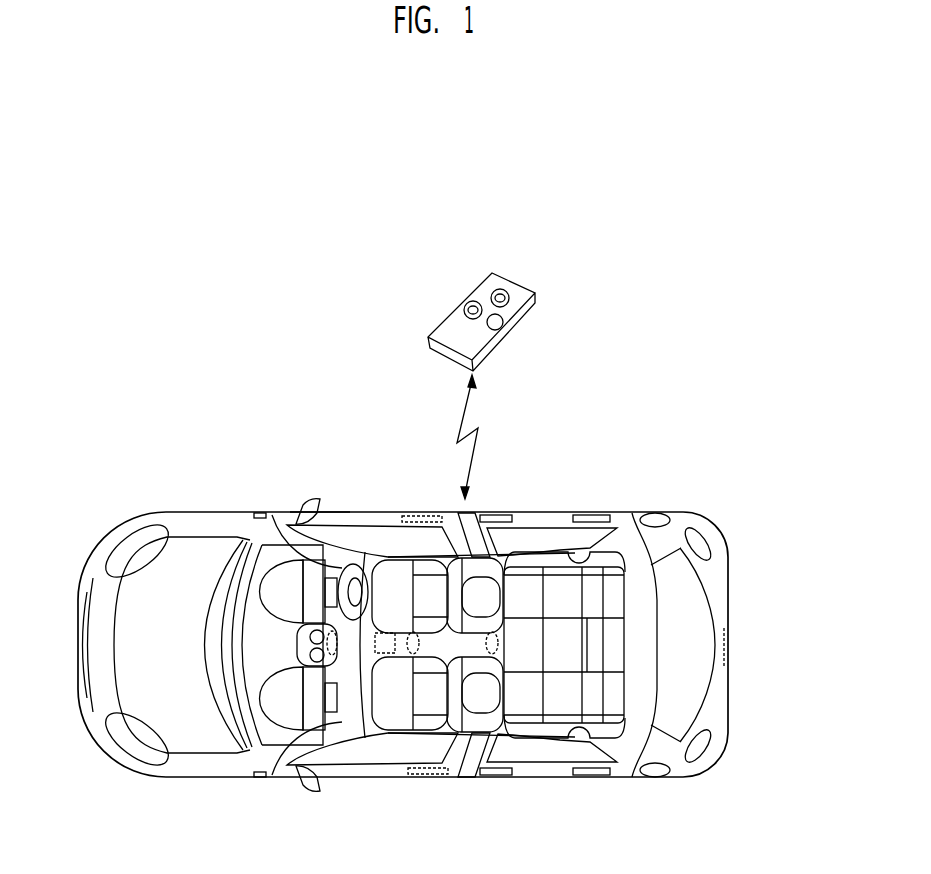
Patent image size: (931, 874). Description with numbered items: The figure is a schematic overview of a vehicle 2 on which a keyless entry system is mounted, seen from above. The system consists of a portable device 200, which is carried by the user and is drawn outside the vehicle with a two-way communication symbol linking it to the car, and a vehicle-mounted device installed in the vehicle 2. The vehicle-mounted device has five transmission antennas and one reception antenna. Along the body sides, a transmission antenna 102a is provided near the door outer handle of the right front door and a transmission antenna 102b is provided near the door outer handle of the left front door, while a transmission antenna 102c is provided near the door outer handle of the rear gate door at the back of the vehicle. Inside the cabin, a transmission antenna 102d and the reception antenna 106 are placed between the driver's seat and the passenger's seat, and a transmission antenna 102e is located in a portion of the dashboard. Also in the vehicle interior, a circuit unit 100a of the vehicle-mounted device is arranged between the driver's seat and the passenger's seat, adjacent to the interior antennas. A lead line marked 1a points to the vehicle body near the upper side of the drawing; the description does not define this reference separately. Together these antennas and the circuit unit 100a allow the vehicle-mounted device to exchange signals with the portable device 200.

The vehicle 2 is at (126, 767).
The vehicle body / door 1a is at (320, 512).
The circuit unit 100a is at (388, 655).
The transmission antenna 102a is at (420, 515).
The transmission antenna 102b is at (428, 777).
The transmission antenna 102c is at (727, 646).
The transmission antenna 102d is at (505, 655).
The transmission antenna 102e is at (333, 658).
The reception antenna 106 is at (408, 634).
The portable device 200 is at (537, 300).